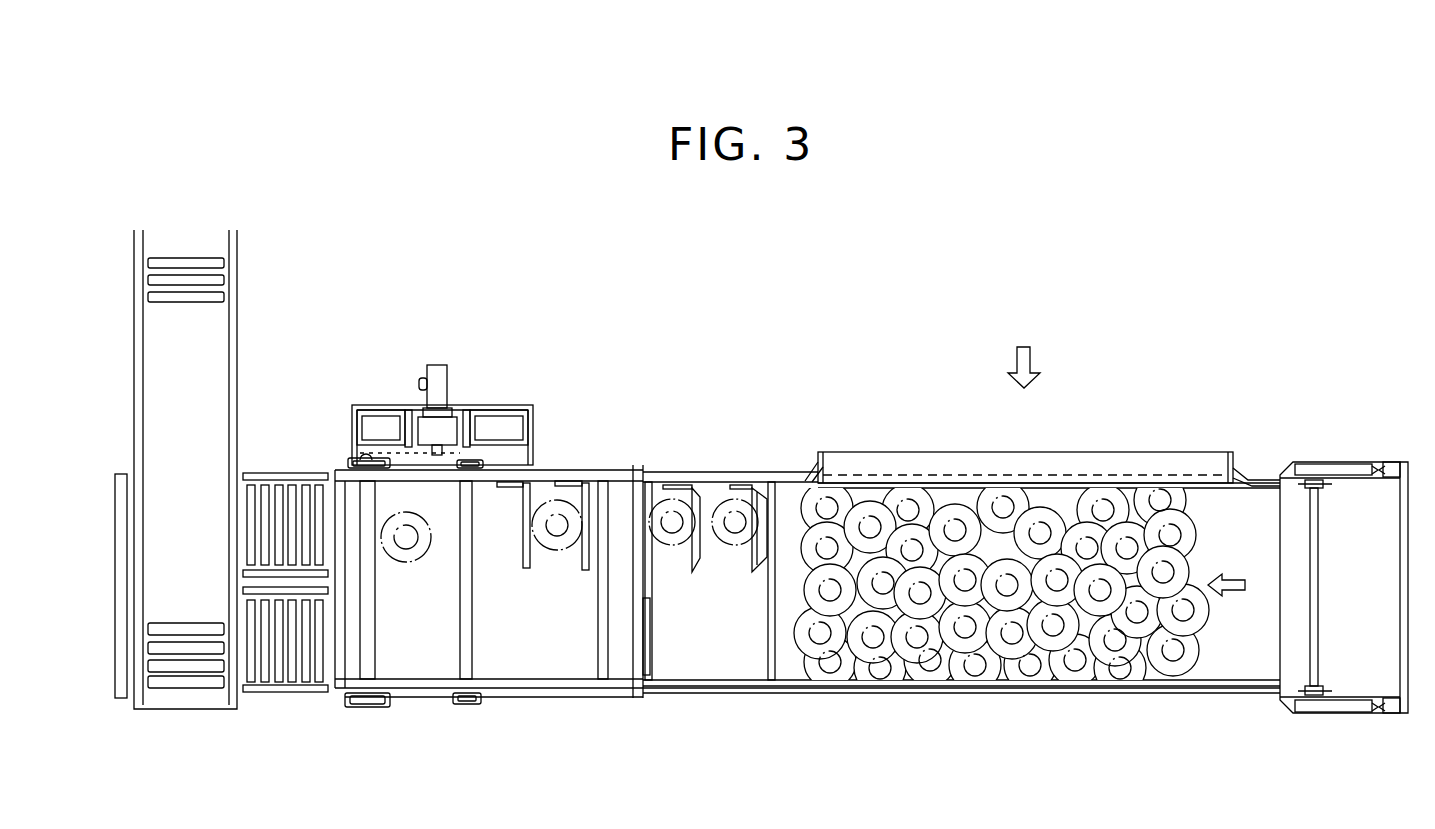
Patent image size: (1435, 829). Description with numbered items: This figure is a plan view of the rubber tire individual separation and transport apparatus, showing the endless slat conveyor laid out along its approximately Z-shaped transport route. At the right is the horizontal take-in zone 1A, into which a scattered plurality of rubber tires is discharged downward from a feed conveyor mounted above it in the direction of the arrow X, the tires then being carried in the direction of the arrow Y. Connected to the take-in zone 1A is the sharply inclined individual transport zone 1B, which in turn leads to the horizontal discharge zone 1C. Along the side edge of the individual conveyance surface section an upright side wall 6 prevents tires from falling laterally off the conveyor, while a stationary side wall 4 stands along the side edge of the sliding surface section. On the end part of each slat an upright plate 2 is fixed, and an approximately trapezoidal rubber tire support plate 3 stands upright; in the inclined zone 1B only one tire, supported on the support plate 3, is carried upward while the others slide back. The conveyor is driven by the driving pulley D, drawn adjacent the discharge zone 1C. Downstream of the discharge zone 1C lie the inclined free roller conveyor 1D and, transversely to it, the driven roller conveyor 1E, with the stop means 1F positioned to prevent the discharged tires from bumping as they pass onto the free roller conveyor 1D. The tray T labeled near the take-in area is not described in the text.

The horizontal take-in zone 1A is at (882, 672).
The sharply inclined individual transport zone 1B is at (695, 672).
The horizontal discharge zone 1C is at (425, 670).
The inclined free roller conveyor 1D is at (293, 680).
The driven roller conveyor 1E is at (187, 683).
The stop means 1F is at (113, 688).
The upright plate 2 is at (571, 485).
The rubber tire support plate 3 is at (590, 500).
The stationary side wall 4 is at (738, 690).
The side wall 6 is at (1257, 478).
The driving pulley D is at (355, 458).
The tray T is at (895, 486).
The arrow X is at (1024, 350).
The arrow Y is at (1237, 586).